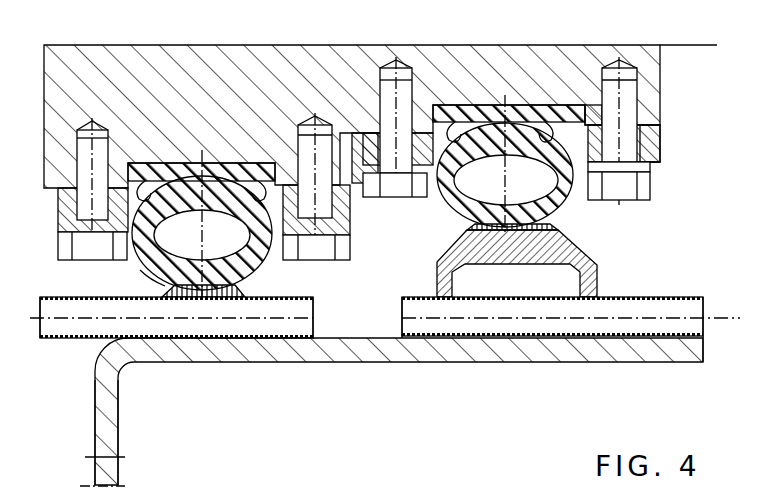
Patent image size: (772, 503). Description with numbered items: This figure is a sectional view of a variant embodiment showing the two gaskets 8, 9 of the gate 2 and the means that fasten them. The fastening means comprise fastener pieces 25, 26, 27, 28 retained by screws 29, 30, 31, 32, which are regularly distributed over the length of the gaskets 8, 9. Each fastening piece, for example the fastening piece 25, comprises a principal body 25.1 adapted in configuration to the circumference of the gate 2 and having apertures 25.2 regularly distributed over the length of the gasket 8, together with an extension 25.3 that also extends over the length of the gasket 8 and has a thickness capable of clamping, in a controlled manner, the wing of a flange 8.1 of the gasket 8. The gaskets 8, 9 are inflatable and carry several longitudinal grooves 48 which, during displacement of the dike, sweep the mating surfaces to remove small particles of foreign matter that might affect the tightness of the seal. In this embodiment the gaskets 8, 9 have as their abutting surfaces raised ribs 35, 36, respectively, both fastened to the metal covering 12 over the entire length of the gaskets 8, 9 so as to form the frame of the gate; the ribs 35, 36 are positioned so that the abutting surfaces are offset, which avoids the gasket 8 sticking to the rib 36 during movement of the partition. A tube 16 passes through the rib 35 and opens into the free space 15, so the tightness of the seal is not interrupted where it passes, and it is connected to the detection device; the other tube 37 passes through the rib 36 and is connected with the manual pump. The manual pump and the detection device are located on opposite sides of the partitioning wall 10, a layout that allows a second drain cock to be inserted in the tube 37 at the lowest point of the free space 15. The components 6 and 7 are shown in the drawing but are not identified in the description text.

The gate 2 is at (316, 75).
The clamping plate of second seal 6 is at (462, 108).
The first sealing element 7 is at (232, 163).
The gasket 8 is at (511, 165).
The flange of the gasket 8.1 is at (532, 105).
The gasket 9 is at (145, 274).
The partitioning wall 10 is at (92, 457).
The metal covering 12 is at (105, 408).
The free space 15 is at (372, 320).
The tube 16 is at (652, 297).
The fastening piece 25 is at (652, 135).
The principal body 25.1 is at (650, 160).
The apertures 25.2 is at (650, 166).
The extension 25.3 is at (577, 108).
The fastener piece 26 is at (346, 226).
The fastener piece 27 is at (352, 240).
The fastener piece 28 is at (66, 204).
The screw 29 is at (638, 190).
The screw 30 is at (405, 188).
The screw 31 is at (322, 250).
The screw 32 is at (53, 306).
The raised rib 35 is at (598, 265).
The raised rib 36 is at (250, 296).
The tube 37 is at (305, 300).
The longitudinal grooves 48 is at (462, 222).